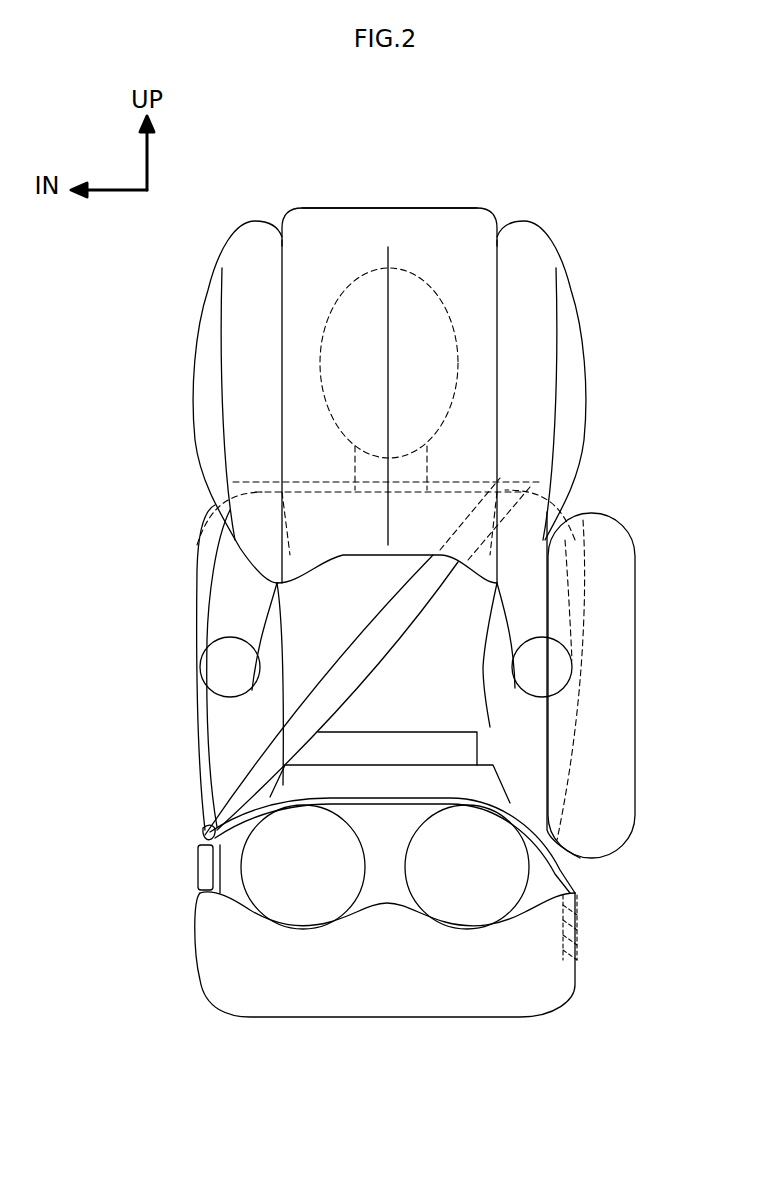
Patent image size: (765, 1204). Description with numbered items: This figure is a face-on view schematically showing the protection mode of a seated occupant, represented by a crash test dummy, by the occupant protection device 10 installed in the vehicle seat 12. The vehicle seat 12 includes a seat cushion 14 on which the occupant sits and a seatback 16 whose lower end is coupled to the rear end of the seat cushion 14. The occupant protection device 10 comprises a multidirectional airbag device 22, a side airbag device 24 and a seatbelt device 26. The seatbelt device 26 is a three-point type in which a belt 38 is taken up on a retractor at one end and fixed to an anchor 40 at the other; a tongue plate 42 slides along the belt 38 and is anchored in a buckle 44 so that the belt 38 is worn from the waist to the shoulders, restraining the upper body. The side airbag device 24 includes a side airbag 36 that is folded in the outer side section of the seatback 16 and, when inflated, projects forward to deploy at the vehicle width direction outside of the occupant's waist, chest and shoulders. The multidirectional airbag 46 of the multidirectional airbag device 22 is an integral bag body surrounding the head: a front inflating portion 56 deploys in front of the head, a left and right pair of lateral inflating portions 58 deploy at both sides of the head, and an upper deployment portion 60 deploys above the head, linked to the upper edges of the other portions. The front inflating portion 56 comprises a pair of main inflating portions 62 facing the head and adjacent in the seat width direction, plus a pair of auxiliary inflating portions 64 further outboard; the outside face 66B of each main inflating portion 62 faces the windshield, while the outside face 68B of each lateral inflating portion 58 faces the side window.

The occupant protection device 10 is at (126, 331).
The vehicle seat 12 is at (331, 681).
The seat cushion 14 is at (215, 975).
The seatback 16 is at (223, 745).
The multidirectional airbag device 22 is at (395, 332).
The side airbag device 24 is at (627, 656).
The seatbelt device 26 is at (374, 879).
The side airbag 36 is at (628, 582).
The belt 38 is at (365, 648).
The anchor 40 is at (575, 925).
The tongue plate 42 is at (205, 832).
The buckle 44 is at (205, 862).
The multidirectional airbag 46 is at (533, 216).
The front inflating portion 56 is at (413, 208).
The lateral inflating portion 58 is at (207, 378).
The upper deployment portion 60 is at (323, 207).
The main inflating portion 62 is at (318, 290).
The auxiliary inflating portion 64 is at (250, 302).
The outside face of main inflating portion 66B is at (356, 318).
The outside face of lateral inflating portion 68B is at (587, 407).